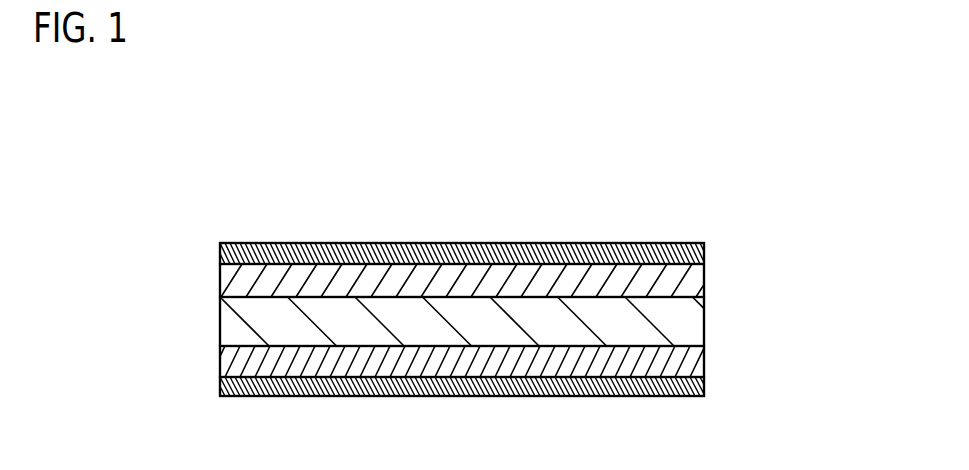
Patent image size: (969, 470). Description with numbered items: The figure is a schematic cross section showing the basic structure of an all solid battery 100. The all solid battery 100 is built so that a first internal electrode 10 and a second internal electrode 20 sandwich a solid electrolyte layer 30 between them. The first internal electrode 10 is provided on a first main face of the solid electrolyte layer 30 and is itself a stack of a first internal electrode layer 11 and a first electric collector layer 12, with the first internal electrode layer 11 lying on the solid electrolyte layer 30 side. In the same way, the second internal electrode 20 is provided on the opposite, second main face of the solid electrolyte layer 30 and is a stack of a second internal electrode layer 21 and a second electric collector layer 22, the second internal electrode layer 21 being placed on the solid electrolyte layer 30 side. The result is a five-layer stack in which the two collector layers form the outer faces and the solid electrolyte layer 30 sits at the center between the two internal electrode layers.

The all solid battery 100 is at (889, 153).
The second internal electrode 20 is at (812, 224).
The second electric collector layer 22 is at (699, 247).
The second internal electrode layer 21 is at (699, 280).
The solid electrolyte layer 30 is at (234, 333).
The first internal electrode 10 is at (812, 338).
The first internal electrode layer 11 is at (692, 357).
The first electric collector layer 12 is at (692, 392).